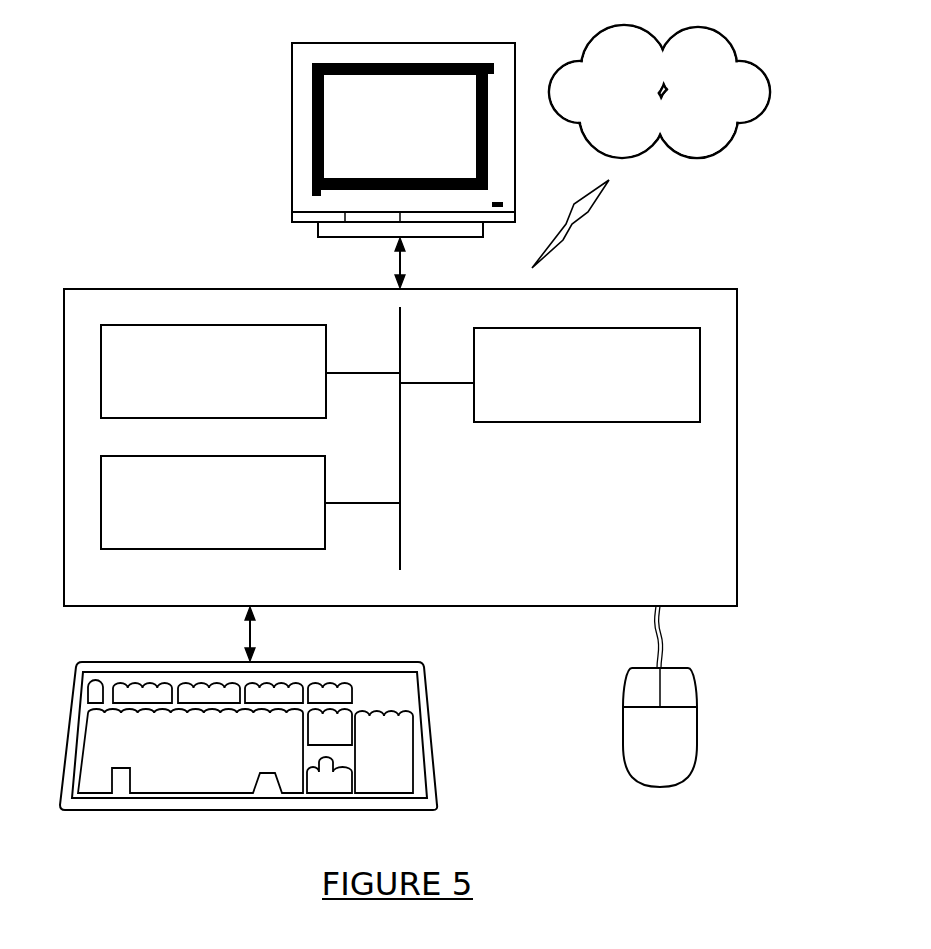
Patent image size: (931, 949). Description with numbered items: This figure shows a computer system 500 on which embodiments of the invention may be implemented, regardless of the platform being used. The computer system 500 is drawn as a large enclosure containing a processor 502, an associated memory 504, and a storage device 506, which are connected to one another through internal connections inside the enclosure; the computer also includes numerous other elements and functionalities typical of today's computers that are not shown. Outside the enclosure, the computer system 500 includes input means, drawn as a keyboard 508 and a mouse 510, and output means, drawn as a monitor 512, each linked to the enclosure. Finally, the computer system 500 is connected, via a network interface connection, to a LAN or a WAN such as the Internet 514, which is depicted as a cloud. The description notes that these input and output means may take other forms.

The computer system 500 is at (763, 287).
The processor 502 is at (565, 388).
The memory 504 is at (191, 387).
The storage device 506 is at (191, 518).
The keyboard 508 is at (171, 767).
The mouse 510 is at (638, 753).
The monitor 512 is at (380, 145).
The LAN or WAN 514 is at (636, 105).